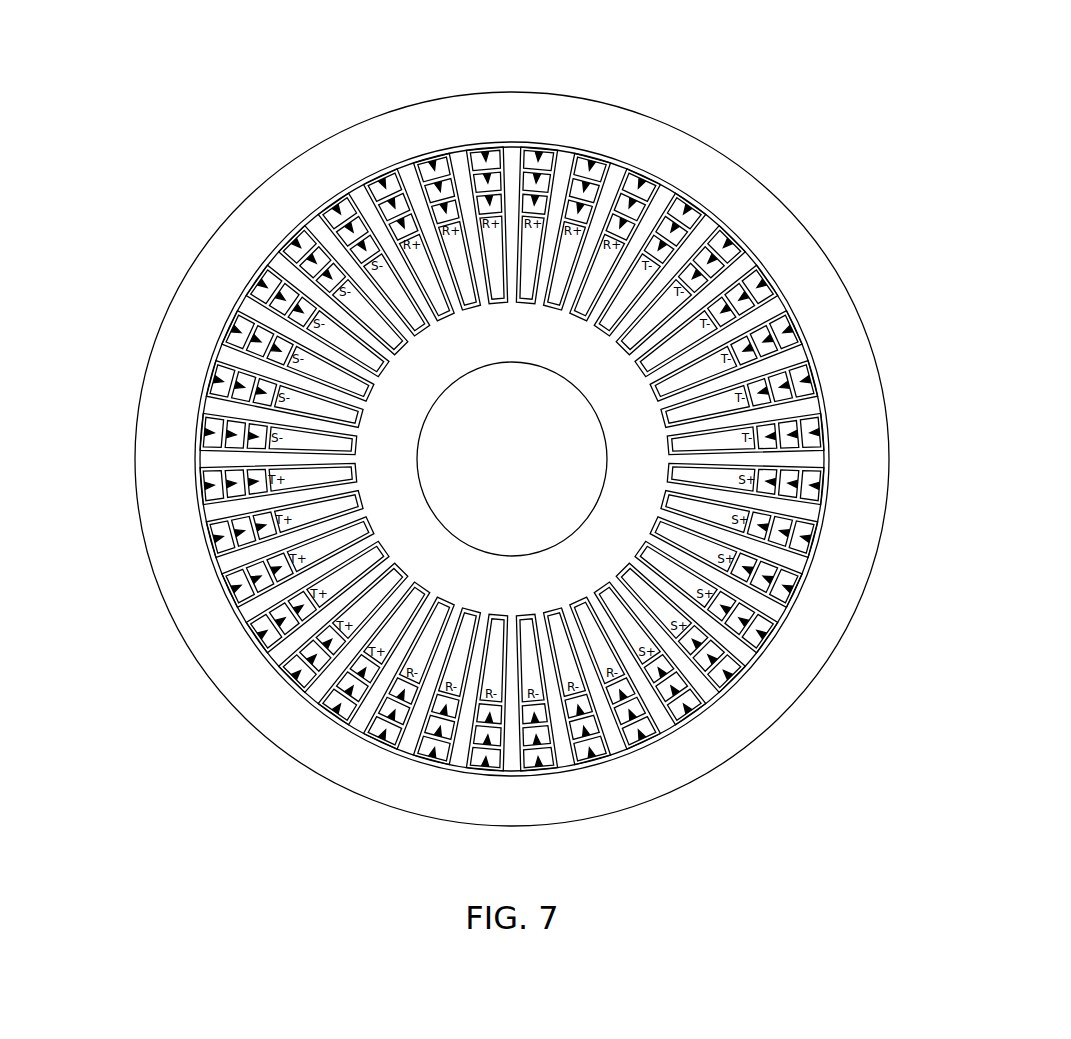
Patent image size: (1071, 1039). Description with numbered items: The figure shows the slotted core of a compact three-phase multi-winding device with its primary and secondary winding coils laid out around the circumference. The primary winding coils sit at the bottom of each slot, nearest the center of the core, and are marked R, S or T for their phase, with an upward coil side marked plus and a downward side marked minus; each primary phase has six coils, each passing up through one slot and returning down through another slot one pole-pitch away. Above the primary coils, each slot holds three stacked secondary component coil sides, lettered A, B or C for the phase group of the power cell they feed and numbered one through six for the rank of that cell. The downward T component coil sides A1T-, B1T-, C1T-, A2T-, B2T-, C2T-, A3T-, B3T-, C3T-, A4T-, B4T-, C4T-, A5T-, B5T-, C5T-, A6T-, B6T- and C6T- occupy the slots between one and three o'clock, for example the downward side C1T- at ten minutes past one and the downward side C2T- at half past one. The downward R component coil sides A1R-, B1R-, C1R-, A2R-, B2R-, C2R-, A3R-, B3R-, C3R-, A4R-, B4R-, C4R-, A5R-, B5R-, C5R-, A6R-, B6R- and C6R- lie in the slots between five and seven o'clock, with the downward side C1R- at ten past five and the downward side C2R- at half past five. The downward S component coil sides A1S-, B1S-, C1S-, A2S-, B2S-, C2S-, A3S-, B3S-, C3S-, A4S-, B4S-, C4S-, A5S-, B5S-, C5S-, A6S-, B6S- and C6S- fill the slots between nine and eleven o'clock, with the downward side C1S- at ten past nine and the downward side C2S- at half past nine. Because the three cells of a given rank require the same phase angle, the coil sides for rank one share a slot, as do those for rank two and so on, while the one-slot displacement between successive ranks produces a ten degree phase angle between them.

The downward side of T component coil for cell A1 A1T- is at (690, 205).
The downward side of T component coil for cell B1 B1T- is at (677, 223).
The downward side of T component coil for cell C1 C1T- is at (665, 241).
The downward side of T component coil for cell A2 A2T- is at (731, 240).
The downward side of T component coil for cell B2 B2T- is at (716, 255).
The downward side of T component coil for cell C2 C2T- is at (700, 271).
The downward side of T component coil for cell A3 A3T- is at (766, 281).
The downward side of T component coil for cell B3 B3T- is at (748, 294).
The downward side of T component coil for cell C3 C3T- is at (730, 306).
The downward side of T component coil for cell A4 A4T- is at (793, 328).
The downward side of T component coil for cell B4 B4T- is at (773, 337).
The downward side of T component coil for cell C4 C4T- is at (753, 347).
The downward side of T component coil for cell A5 A5T- is at (811, 379).
The downward side of T component coil for cell B5 B5T- is at (790, 384).
The downward side of T component coil for cell C5 C5T- is at (769, 390).
The downward side of T component coil for cell A6 A6T- is at (821, 432).
The downward side of T component coil for cell B6 B6T- is at (799, 434).
The downward side of T component coil for cell C6 C6T- is at (777, 436).
The downward side of R component coil for cell A1 A1R- is at (643, 740).
The downward side of R component coil for cell B1 B1R- is at (634, 720).
The downward side of R component coil for cell C1 C1R- is at (624, 700).
The downward side of R component coil for cell A2 A2R- is at (592, 758).
The downward side of R component coil for cell B2 B2R- is at (587, 737).
The downward side of R component coil for cell C2 C2R- is at (581, 716).
The downward side of R component coil for cell A3 A3R- is at (539, 768).
The downward side of R component coil for cell B3 B3R- is at (537, 746).
The downward side of R component coil for cell C3 C3R- is at (535, 724).
The downward side of R component coil for cell A4 A4R- is at (485, 768).
The downward side of R component coil for cell B4 B4R- is at (487, 746).
The downward side of R component coil for cell C4 C4R- is at (489, 724).
The downward side of R component coil for cell A5 A5R- is at (432, 758).
The downward side of R component coil for cell B5 B5R- is at (437, 737).
The downward side of R component coil for cell C5 C5R- is at (443, 716).
The downward side of R component coil for cell A6 A6R- is at (381, 740).
The downward side of R component coil for cell B6 B6R- is at (390, 720).
The downward side of R component coil for cell C6 C6R- is at (400, 700).
The downward side of S component coil for cell A1 A1S- is at (203, 432).
The downward side of S component coil for cell B1 B1S- is at (225, 434).
The downward side of S component coil for cell C1 C1S- is at (247, 436).
The downward side of S component coil for cell A2 A2S- is at (213, 379).
The downward side of S component coil for cell B2 B2S- is at (234, 384).
The downward side of S component coil for cell C2 C2S- is at (255, 390).
The downward side of S component coil for cell A3 A3S- is at (231, 328).
The downward side of S component coil for cell B3 B3S- is at (251, 337).
The downward side of S component coil for cell C3 C3S- is at (271, 347).
The downward side of S component coil for cell A4 A4S- is at (258, 281).
The downward side of S component coil for cell B4 B4S- is at (276, 294).
The downward side of S component coil for cell C4 C4S- is at (294, 306).
The downward side of S component coil for cell A5 A5S- is at (293, 240).
The downward side of S component coil for cell B5 B5S- is at (308, 255).
The downward side of S component coil for cell C5 C5S- is at (324, 271).
The downward side of S component coil for cell A6 A6S- is at (334, 205).
The downward side of S component coil for cell B6 B6S- is at (347, 223).
The downward side of S component coil for cell C6 C6S- is at (359, 241).